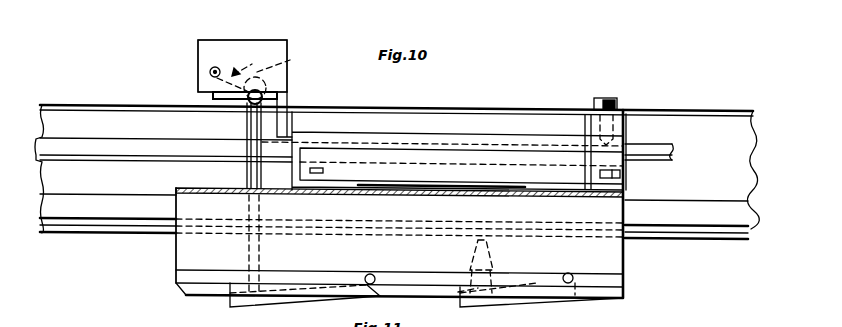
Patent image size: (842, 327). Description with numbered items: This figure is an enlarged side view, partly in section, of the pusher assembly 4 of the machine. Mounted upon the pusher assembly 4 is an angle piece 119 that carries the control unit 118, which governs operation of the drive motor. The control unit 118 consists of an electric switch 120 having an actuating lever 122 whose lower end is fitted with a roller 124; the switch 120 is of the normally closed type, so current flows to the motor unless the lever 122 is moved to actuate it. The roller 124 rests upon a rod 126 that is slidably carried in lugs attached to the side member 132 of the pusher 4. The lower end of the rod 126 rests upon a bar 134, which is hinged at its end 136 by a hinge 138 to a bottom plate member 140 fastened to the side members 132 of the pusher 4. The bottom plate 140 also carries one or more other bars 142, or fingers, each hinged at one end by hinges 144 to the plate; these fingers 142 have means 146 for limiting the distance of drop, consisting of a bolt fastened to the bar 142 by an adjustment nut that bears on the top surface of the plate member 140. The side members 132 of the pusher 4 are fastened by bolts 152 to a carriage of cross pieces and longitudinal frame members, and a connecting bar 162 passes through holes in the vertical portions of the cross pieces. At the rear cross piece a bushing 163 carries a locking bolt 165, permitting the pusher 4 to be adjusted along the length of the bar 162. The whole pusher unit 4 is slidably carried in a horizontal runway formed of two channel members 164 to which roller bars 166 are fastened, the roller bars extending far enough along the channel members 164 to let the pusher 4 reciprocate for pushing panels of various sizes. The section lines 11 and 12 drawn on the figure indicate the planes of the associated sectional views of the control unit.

The pusher assembly 4 is at (612, 266).
The section line 11- 11 is at (42, 107).
The section line 12- 12 is at (485, 326).
The control unit 118 is at (250, 37).
The angle piece 119 is at (292, 95).
The electric switch 120 is at (199, 50).
The actuating lever 122 is at (238, 72).
The roller 124 is at (289, 64).
The rod 126 is at (246, 121).
The side member 132 is at (182, 253).
The bar 134 is at (263, 302).
The end 136 is at (374, 296).
The hinge 138 is at (373, 274).
The bottom plate member 140 is at (613, 300).
The bar 142 is at (515, 303).
The hinge 144 is at (584, 256).
The means for limiting the distance of drop 146 is at (497, 252).
The bolt 152 is at (622, 175).
The connecting bar 162 is at (88, 140).
The bushing 163 is at (616, 127).
The channel member 164 is at (717, 137).
The locking bolt 165 is at (613, 98).
The roller bar 166 is at (707, 207).